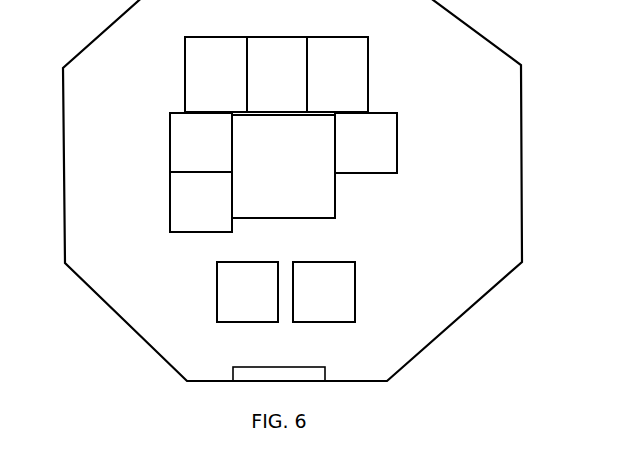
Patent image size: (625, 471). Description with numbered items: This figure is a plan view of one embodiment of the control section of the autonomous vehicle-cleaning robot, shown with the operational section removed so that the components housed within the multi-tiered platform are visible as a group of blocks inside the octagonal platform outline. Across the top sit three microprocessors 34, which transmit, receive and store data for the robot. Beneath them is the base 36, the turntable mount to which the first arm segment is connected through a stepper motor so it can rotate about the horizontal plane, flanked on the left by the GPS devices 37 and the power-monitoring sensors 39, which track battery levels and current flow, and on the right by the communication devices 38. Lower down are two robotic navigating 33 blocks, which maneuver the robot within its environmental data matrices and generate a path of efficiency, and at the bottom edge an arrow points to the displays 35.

The robotic navigating 33 is at (233, 296).
The microprocessors 34 is at (204, 72).
The displays 35 is at (263, 337).
The base 36 is at (265, 151).
The geo-synchronous positioned satellite (GPS) devices 37 is at (189, 149).
The communication devices 38 is at (349, 149).
The sensors 39 is at (189, 207).